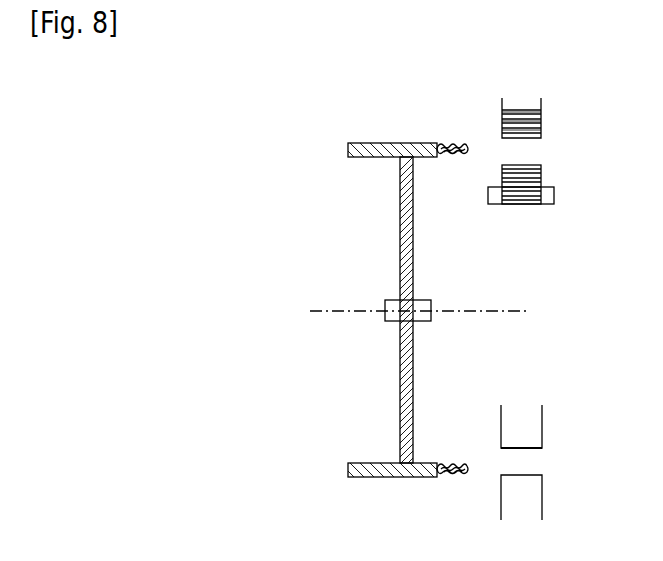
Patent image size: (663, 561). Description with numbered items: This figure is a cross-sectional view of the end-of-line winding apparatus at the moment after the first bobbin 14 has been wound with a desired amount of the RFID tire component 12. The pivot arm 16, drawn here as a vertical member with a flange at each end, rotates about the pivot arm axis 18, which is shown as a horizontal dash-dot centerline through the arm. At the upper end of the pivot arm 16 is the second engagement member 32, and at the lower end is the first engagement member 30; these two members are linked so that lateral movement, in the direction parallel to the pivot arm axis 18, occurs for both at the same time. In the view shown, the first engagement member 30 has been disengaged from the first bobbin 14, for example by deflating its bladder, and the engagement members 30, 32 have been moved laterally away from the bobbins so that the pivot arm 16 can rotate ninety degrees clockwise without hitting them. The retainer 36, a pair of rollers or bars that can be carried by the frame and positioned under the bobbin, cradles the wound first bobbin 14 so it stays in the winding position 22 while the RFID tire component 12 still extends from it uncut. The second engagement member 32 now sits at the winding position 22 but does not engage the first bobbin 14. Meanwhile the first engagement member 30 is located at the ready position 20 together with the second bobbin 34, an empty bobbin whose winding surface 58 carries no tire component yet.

The RFID tire component 12 is at (520, 113).
The bobbin 14 is at (540, 121).
The pivot arm 16 is at (400, 222).
The pivot arm axis 18 is at (490, 311).
The ready position 20 is at (581, 449).
The winding position 22 is at (581, 138).
The first engagement member 30 is at (445, 478).
The second engagement member 32 is at (447, 146).
The second bobbin 34 is at (542, 437).
The retainer 36 is at (554, 195).
The winding surface 58 is at (520, 447).